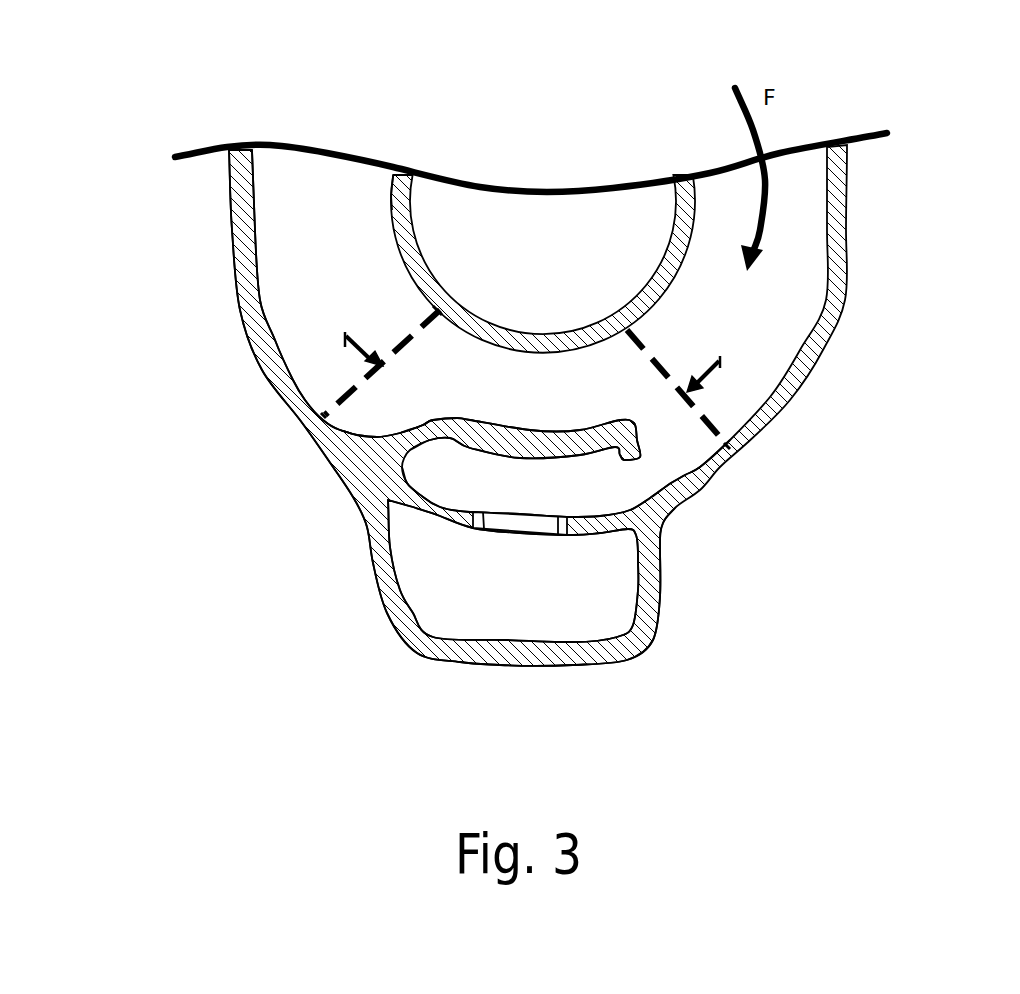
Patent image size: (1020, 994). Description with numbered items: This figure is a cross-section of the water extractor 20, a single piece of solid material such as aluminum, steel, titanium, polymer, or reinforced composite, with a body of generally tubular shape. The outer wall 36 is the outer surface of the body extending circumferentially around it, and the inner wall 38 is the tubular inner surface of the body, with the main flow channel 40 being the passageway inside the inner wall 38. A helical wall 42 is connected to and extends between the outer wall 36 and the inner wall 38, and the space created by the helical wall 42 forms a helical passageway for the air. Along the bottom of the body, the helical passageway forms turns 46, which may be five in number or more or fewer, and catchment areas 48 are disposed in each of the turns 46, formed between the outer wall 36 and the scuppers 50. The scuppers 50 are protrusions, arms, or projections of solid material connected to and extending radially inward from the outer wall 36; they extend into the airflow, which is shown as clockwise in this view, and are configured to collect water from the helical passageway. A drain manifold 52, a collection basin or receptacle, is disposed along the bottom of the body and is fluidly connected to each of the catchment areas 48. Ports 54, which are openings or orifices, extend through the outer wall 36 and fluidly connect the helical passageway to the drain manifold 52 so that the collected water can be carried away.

The water extractor 20 is at (873, 167).
The outer wall 36 is at (228, 276).
The inner wall 38 is at (392, 210).
The main flow channel 40 is at (559, 261).
The helical wall 42 is at (331, 284).
The turns 46 is at (347, 335).
The catchment areas 48 is at (583, 495).
The scuppers 50 is at (640, 443).
The drain manifold 52 is at (373, 580).
The ports 54 is at (523, 538).